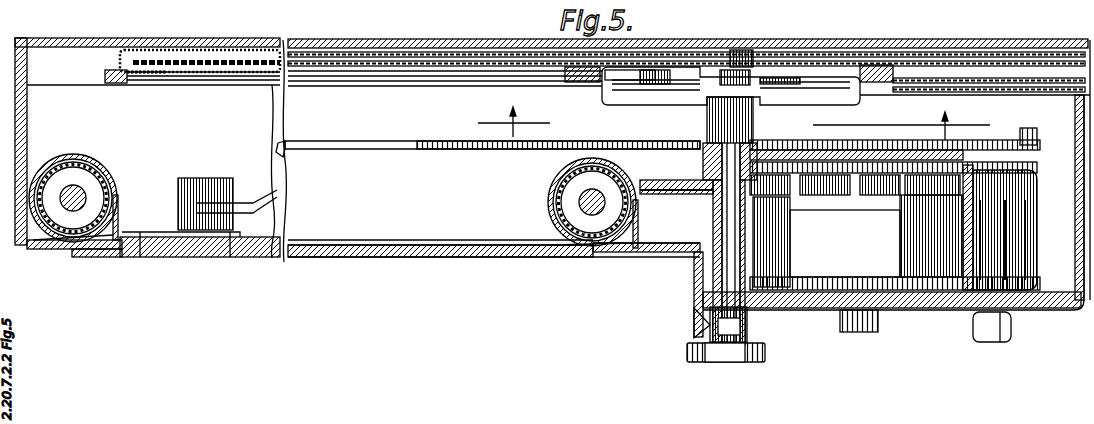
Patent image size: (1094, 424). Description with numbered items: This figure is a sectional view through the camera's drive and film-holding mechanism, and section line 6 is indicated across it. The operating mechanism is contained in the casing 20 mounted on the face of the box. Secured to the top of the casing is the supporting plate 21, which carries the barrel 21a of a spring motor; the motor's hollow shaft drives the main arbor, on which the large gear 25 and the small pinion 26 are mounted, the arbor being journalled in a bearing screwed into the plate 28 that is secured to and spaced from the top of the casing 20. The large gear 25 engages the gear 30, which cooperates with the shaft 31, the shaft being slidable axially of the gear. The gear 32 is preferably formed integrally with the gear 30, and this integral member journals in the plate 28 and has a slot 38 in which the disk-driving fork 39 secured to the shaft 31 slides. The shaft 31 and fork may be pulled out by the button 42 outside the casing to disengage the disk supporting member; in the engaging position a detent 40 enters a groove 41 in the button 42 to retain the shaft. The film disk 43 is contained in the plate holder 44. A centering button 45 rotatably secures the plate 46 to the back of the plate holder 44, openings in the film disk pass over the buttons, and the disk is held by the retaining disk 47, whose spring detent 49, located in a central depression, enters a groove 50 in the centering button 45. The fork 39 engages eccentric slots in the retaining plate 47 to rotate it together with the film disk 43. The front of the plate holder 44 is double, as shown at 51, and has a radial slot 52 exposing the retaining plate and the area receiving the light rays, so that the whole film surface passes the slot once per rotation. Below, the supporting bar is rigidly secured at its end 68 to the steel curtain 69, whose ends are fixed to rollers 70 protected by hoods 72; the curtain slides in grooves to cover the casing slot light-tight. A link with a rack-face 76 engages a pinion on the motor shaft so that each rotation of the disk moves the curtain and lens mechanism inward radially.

The casing 20 is at (1077, 222).
The supporting plate 21 is at (1022, 302).
The barrel of spring motor 21a is at (1010, 263).
The large gear 25 is at (1035, 185).
The small pinion 26 is at (905, 138).
The plate 28 is at (1043, 148).
The gear 30 is at (698, 172).
The shaft 31 is at (730, 222).
The gear 32 is at (650, 196).
The slot 38 is at (707, 128).
The disk-driving fork 39 is at (798, 98).
The detent 40 is at (697, 329).
The groove 41 is at (747, 328).
The button 42 is at (715, 355).
The film disk 43 is at (232, 62).
The plate holder 44 is at (135, 50).
The centering button 45 is at (758, 57).
The plate 46 is at (673, 62).
The retaining disk 47 is at (890, 62).
The spring detent 49 is at (758, 96).
The groove 50 is at (737, 62).
The double front 51 is at (157, 84).
The radial slot 52 is at (253, 85).
The end of supporting bar 68 is at (163, 232).
The steel curtain 69 is at (515, 250).
The rollers 70 is at (115, 180).
The hoods 72 is at (88, 154).
The rack-face 76 is at (470, 140).
The section line 6 is at (734, 123).